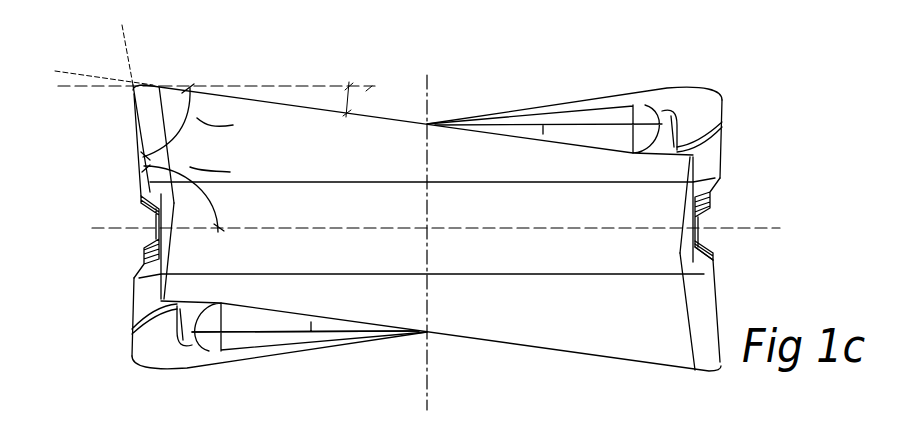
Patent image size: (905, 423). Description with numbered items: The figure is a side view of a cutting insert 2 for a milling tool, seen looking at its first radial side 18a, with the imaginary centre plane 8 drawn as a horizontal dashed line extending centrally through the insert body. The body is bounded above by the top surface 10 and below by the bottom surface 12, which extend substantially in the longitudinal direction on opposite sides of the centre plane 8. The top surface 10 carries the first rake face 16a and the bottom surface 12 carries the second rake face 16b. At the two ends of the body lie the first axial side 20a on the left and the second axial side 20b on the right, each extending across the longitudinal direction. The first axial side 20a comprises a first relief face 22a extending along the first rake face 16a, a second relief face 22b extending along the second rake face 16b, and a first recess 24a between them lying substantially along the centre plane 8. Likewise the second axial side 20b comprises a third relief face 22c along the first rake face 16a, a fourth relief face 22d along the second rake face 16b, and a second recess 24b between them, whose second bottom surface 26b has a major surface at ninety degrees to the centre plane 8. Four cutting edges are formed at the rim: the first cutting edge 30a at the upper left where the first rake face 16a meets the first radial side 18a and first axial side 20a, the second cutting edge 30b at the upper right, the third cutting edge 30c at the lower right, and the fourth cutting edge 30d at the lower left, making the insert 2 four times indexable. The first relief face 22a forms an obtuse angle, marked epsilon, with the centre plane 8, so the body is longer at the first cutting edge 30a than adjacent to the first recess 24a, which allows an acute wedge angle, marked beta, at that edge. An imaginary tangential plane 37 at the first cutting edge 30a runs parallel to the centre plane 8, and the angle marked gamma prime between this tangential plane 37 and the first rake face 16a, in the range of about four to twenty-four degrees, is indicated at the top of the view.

The cutting insert 2 is at (428, 216).
The centre plane 8 is at (492, 229).
The top surface 10 is at (397, 110).
The bottom surface 12 is at (340, 350).
The first rake face 16a is at (463, 115).
The second rake face 16b is at (393, 348).
The first radial side 18a is at (344, 164).
The first axial side 20a is at (118, 187).
The second axial side 20b is at (745, 172).
The first relief face 22a is at (134, 140).
The second relief face 22b is at (133, 320).
The third relief face 22c is at (724, 135).
The fourth relief face 22d is at (714, 281).
The first recess 24a is at (150, 237).
The second recess 24b is at (709, 220).
The second bottom surface 26b is at (703, 238).
The first cutting edge 30a is at (181, 89).
The second cutting edge 30b is at (675, 88).
The third cutting edge 30c is at (659, 368).
The fourth cutting edge 30d is at (182, 370).
The tangential plane 37 is at (308, 86).